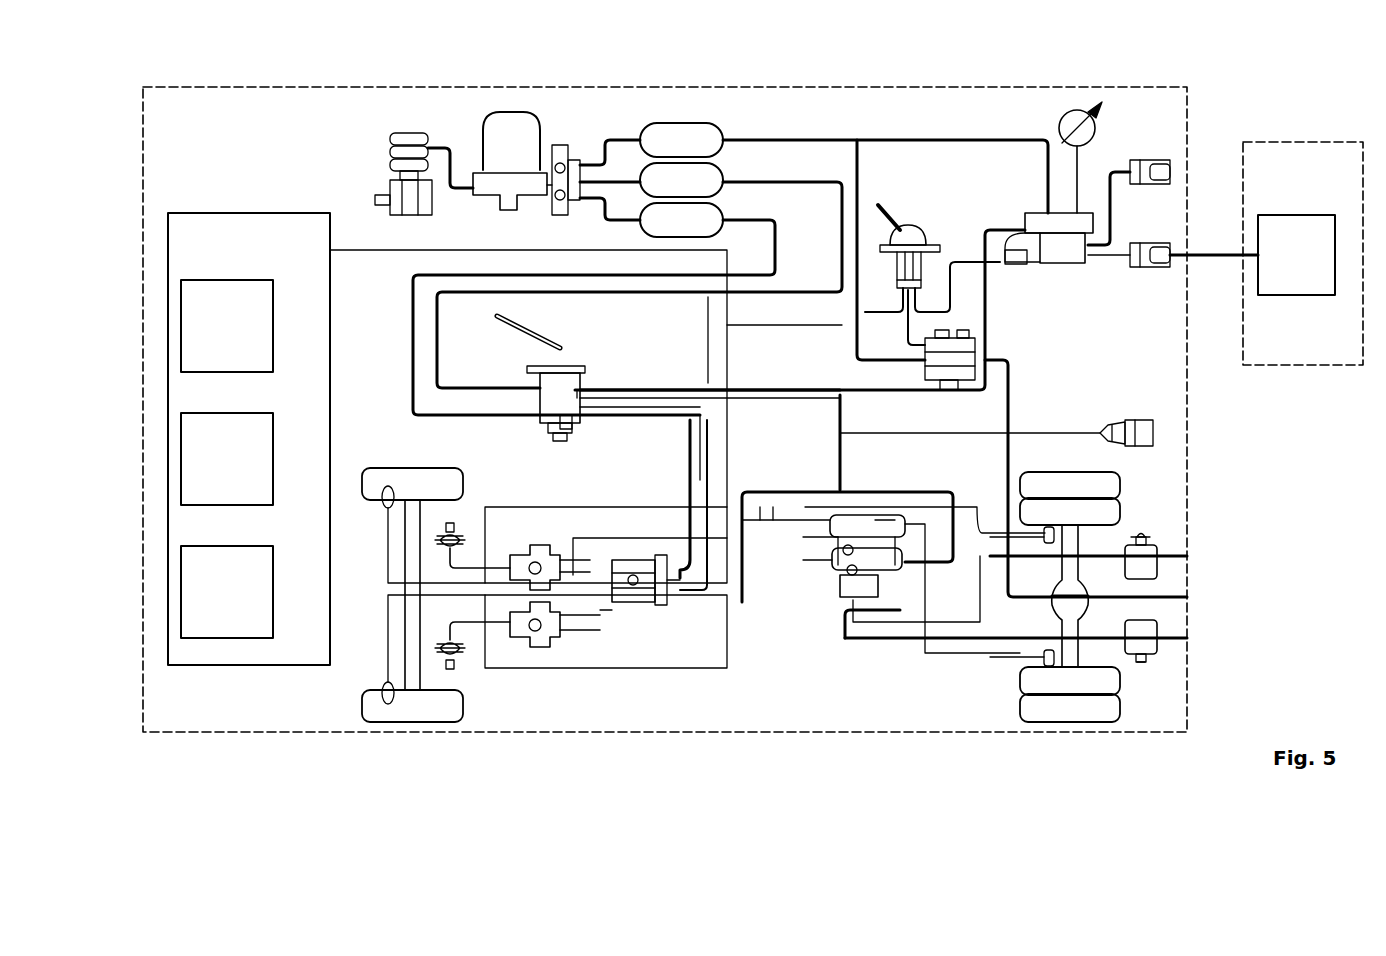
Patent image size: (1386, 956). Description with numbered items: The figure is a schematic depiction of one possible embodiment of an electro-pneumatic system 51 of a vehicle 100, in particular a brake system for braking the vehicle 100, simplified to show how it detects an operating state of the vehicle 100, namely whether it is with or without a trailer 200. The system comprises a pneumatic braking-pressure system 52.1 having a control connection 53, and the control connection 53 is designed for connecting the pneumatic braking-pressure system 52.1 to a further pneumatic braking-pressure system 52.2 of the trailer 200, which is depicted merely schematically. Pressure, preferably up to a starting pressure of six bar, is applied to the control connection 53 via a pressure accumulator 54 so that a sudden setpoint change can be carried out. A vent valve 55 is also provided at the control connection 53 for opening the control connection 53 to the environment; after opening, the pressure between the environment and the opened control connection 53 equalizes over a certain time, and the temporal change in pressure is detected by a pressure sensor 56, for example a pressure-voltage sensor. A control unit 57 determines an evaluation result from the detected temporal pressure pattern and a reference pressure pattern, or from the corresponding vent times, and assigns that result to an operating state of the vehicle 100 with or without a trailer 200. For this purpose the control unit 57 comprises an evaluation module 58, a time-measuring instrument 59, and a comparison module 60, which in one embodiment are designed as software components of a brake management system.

The vehicle 100 is at (1150, 87).
The trailer 200 is at (1302, 142).
The electro-pneumatic system 51 is at (374, 105).
The pneumatic braking-pressure system 52.1 is at (740, 215).
The further pneumatic braking-pressure system 52.2 is at (1290, 218).
The control connection 53 is at (1010, 268).
The pressure accumulator 54 is at (680, 123).
The vent valve 55 is at (1072, 285).
The pressure sensor 56 is at (1082, 108).
The control unit 57 is at (247, 213).
The evaluation module 58 is at (193, 328).
The time-measuring instrument 59 is at (193, 462).
The comparison module 60 is at (193, 600).